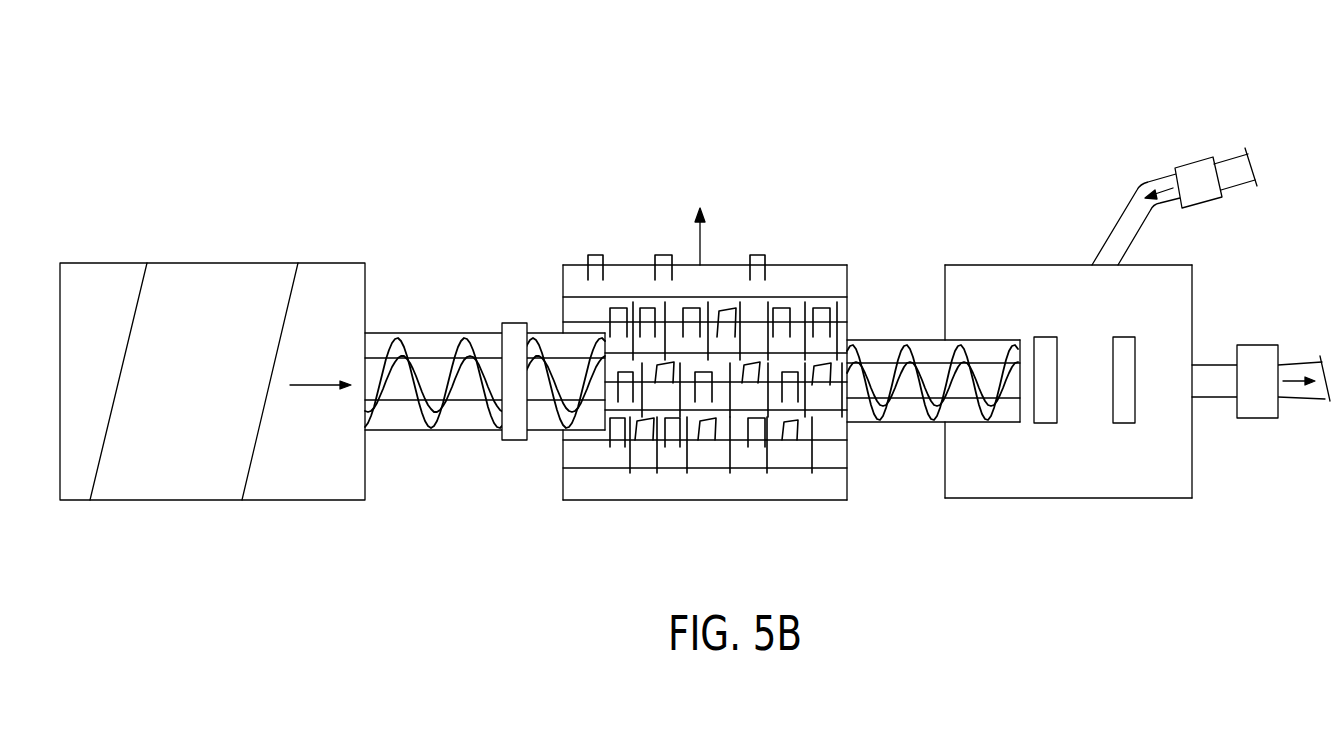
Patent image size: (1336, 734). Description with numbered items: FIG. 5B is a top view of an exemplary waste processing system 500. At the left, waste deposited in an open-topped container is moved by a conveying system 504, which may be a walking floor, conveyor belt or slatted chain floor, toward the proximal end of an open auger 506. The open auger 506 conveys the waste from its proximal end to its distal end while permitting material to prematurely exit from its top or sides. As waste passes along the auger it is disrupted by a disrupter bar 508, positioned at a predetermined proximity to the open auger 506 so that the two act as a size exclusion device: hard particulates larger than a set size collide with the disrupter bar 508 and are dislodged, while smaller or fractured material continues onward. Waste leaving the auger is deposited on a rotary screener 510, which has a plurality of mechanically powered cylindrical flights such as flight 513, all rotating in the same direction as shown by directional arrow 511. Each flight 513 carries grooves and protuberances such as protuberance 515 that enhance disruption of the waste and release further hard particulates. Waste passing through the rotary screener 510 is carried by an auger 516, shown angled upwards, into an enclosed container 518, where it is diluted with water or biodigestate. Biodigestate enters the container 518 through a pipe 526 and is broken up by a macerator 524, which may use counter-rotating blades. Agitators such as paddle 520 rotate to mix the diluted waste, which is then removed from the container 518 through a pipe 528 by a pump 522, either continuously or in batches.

The waste processing system 500 is at (784, 83).
The conveying system 504 is at (210, 272).
The open auger 506 is at (467, 332).
The disrupter bar 508 is at (512, 323).
The rotary screener 510 is at (828, 267).
The directional arrow 511 is at (702, 243).
The flight 513 is at (822, 458).
The protuberance 515 is at (755, 435).
The auger 516 is at (880, 340).
The container 518 is at (990, 265).
The paddle 520 is at (1045, 425).
The pump 522 is at (1257, 345).
The macerator 524 is at (1200, 158).
The pipe 526 is at (1158, 178).
The pipe 528 is at (1208, 397).